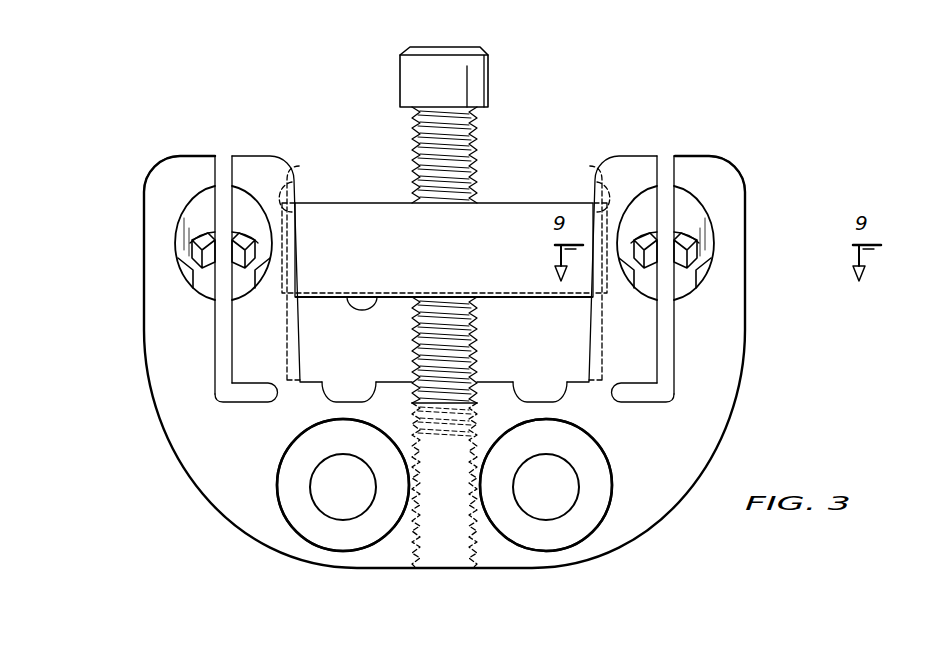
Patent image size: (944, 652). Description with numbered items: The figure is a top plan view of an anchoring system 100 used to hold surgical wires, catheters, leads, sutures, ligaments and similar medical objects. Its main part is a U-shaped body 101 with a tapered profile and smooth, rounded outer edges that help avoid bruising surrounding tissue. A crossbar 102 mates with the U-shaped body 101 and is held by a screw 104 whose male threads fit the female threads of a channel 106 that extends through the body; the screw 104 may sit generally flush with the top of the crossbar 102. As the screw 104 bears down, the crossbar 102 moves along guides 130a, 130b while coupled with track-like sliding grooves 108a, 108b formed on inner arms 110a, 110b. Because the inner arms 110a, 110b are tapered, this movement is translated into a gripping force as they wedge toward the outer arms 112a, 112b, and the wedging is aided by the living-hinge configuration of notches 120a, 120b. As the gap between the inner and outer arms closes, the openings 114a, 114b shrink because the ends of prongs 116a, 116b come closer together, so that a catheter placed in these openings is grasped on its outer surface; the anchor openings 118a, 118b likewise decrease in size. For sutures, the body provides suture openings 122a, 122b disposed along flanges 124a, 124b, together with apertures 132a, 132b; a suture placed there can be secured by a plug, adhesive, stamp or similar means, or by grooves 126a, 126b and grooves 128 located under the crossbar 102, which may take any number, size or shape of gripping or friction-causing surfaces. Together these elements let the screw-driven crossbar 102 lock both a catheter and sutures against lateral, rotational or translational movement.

The system 100 is at (725, 64).
The U-shaped body 101 is at (190, 497).
The crossbar 102 is at (455, 262).
The screw 104 is at (400, 80).
The channel 106 is at (447, 568).
The sliding groove 108a is at (295, 172).
The sliding groove 108b is at (560, 250).
The inner arm 110a is at (270, 158).
The inner arm 110b is at (567, 245).
The outer arm 112a is at (165, 157).
The outer arm 112b is at (722, 153).
The opening 114a is at (190, 217).
The opening 114b is at (719, 243).
The prong 116a is at (197, 238).
The prong 116b is at (720, 257).
The anchor opening 118a is at (222, 158).
The anchor opening 118b is at (670, 244).
The notch 120a is at (246, 398).
The notch 120b is at (645, 423).
The suture opening 122a is at (330, 545).
The suture opening 122b is at (569, 509).
The flange 124a is at (297, 513).
The flange 124b is at (599, 488).
The groove 126a is at (348, 401).
The groove 126b is at (543, 376).
The grooves 128 is at (366, 297).
The guide 130a is at (300, 232).
The guide 130b is at (551, 228).
The aperture 132a is at (355, 505).
The aperture 132b is at (542, 535).